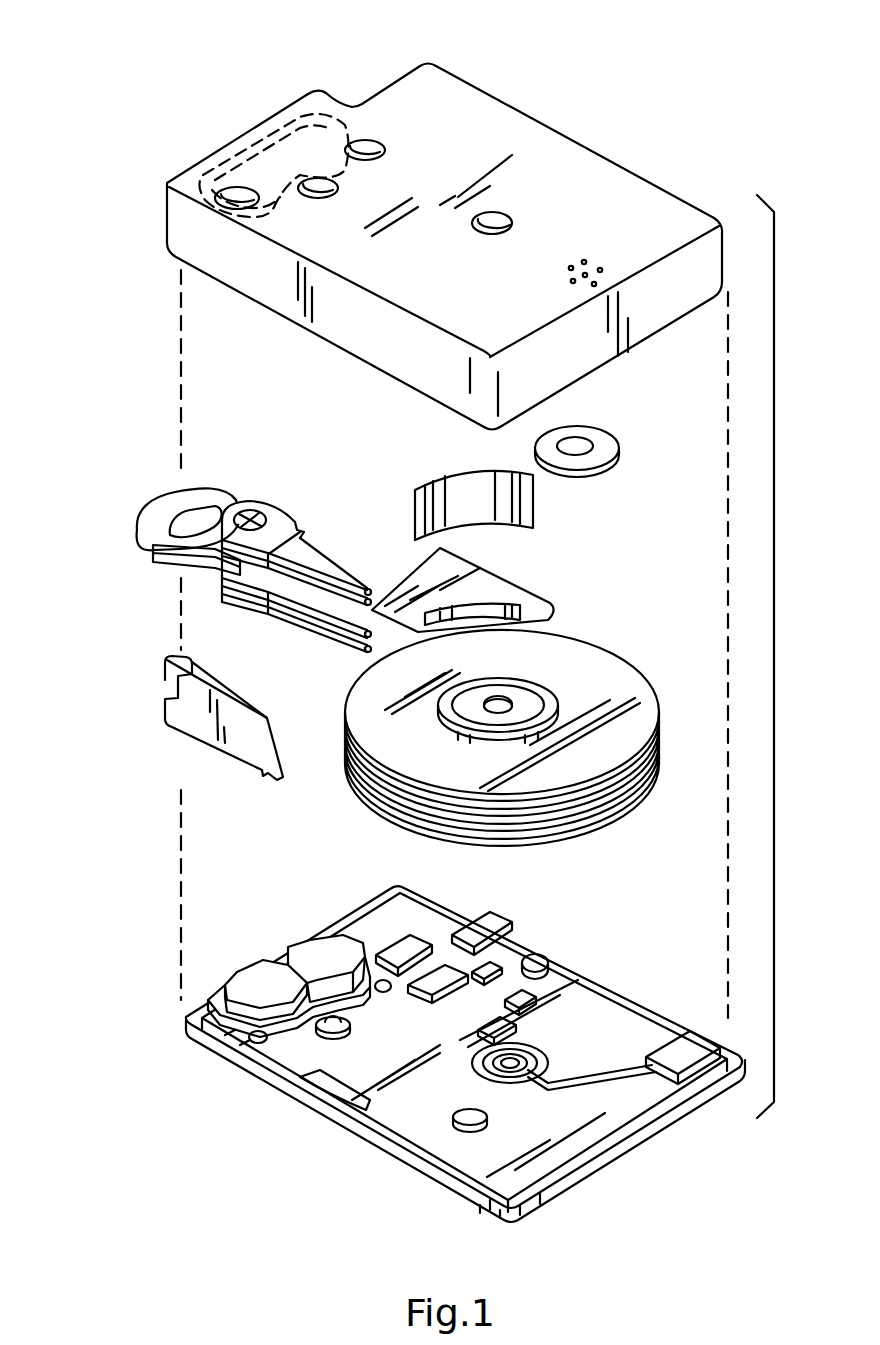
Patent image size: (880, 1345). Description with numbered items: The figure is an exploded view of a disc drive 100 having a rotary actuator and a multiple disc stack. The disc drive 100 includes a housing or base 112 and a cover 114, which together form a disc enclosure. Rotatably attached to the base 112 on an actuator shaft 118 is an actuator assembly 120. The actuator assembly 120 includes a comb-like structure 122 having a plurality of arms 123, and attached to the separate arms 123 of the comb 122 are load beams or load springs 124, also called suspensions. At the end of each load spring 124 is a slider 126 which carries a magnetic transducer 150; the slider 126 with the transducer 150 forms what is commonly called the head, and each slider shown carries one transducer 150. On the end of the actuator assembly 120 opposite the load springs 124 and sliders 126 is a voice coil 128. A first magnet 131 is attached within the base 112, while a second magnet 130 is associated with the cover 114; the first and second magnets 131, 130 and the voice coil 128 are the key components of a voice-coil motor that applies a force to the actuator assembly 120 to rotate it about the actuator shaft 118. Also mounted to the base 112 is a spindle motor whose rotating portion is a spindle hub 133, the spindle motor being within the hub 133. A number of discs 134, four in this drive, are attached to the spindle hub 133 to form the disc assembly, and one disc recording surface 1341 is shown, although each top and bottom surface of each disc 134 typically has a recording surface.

The disc drive 100 is at (574, 43).
The base 112 is at (632, 1015).
The cover 114 is at (597, 178).
The actuator shaft 118 is at (251, 512).
The actuator assembly 120 is at (200, 565).
The comb-like structure 122 is at (272, 619).
The arms 123 is at (307, 536).
The load springs 124 is at (320, 560).
The slider 126 is at (368, 590).
The voice coil 128 is at (158, 520).
The second magnet 130 is at (265, 137).
The first magnet 131 is at (248, 987).
The spindle hub 133 is at (505, 697).
The discs 134 is at (356, 832).
The disc recording surface 1341 is at (626, 682).
The magnetic transducer 150 is at (368, 589).